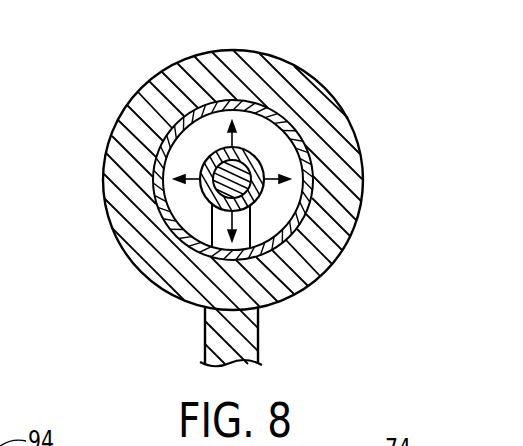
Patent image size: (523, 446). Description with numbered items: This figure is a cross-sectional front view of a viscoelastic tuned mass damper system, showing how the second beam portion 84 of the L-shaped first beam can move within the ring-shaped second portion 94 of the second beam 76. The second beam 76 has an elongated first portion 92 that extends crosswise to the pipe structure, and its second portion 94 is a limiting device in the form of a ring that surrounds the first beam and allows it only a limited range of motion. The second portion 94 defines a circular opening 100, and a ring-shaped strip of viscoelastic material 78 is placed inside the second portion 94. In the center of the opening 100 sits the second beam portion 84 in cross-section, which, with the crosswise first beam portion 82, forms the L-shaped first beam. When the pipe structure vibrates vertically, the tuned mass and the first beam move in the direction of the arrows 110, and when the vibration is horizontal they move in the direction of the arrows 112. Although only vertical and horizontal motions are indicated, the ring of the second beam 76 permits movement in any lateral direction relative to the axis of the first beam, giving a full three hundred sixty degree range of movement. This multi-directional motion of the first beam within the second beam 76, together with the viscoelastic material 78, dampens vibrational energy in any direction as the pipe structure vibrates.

The second beam 76 is at (182, 313).
The viscoelastic material 78 is at (222, 102).
The first beam portion 82 is at (164, 217).
The second beam portion 84 is at (162, 150).
The first portion 92 is at (215, 349).
The second portion 94 is at (312, 92).
The circular opening 100 is at (257, 128).
The arrows 110 is at (168, 128).
The arrows 112 is at (172, 178).